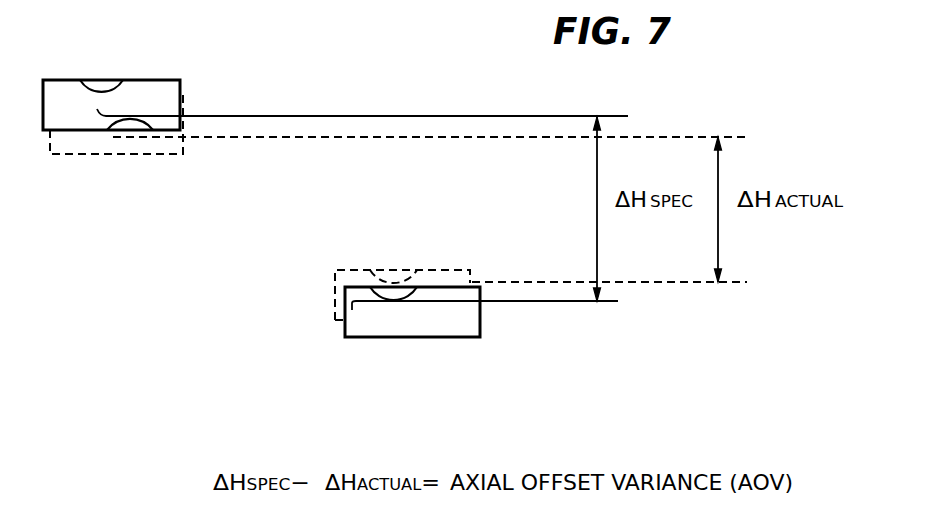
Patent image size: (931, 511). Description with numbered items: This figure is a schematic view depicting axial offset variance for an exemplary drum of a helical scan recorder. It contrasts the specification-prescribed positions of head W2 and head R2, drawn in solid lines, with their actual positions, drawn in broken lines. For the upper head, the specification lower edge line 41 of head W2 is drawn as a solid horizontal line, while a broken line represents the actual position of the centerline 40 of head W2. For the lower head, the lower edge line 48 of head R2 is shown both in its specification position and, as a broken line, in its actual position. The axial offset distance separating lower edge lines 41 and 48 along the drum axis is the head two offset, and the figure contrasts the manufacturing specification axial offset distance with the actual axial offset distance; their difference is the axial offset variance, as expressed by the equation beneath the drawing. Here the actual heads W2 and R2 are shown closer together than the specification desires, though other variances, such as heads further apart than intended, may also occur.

The head W2 is at (63, 80).
The head R2 is at (355, 270).
The lower edge line of head W2 41 is at (318, 117).
The centerline of head W2 40 is at (310, 138).
The lower edge line of head R2 48 is at (502, 282).